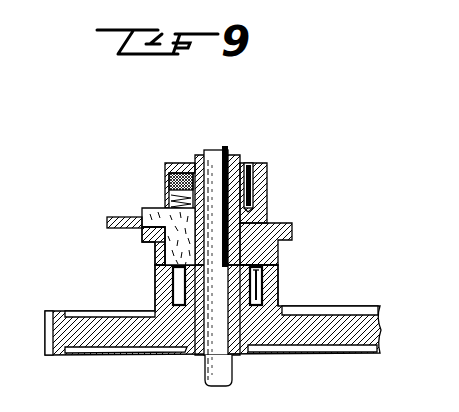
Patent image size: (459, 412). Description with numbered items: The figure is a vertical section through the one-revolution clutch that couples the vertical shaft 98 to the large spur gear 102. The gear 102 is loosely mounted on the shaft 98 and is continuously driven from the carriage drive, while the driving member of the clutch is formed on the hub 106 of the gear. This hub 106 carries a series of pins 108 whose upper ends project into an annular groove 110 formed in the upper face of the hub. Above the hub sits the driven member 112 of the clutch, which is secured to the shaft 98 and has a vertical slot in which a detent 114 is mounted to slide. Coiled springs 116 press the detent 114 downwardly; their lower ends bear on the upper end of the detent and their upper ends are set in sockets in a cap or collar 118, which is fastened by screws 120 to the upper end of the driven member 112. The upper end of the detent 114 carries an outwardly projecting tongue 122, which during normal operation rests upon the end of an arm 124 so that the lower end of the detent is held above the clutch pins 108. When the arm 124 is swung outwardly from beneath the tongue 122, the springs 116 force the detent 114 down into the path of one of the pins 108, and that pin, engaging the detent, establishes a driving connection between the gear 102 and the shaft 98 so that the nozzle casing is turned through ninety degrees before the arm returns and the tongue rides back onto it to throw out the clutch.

The vertical shaft 98 is at (217, 156).
The large spur gear 102 is at (83, 330).
The hub 106 is at (162, 299).
The pins 108 is at (174, 289).
The annular groove 110 is at (266, 268).
The driven member 112 is at (257, 228).
The detent 114 is at (175, 250).
The coiled springs 116 is at (165, 183).
The cap or collar 118 is at (263, 180).
The screws 120 is at (247, 167).
The tongue 122 is at (148, 222).
The arm 124 is at (107, 222).